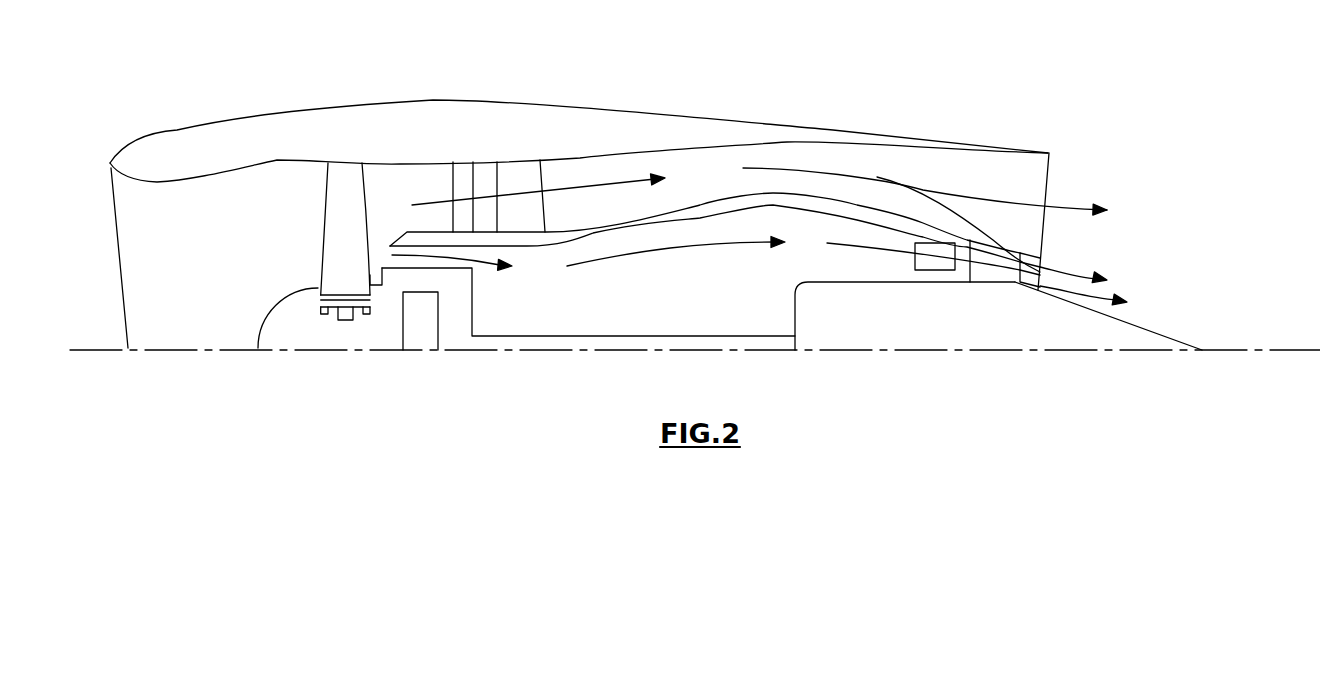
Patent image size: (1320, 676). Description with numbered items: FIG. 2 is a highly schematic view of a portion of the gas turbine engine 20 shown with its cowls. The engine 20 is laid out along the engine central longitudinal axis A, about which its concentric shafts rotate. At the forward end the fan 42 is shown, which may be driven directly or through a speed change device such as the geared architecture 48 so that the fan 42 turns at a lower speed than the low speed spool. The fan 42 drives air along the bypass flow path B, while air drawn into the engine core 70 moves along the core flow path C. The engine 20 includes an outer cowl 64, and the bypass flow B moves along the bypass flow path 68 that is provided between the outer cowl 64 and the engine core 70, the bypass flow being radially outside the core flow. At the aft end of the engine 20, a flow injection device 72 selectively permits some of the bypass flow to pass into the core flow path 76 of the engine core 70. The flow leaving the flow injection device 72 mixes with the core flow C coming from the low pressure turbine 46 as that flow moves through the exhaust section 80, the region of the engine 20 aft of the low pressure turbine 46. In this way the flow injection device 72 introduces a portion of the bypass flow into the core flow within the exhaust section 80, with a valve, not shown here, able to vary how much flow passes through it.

The gas turbine engine 20 is at (930, 106).
The fan 42 is at (333, 257).
The low pressure turbine section 46 is at (925, 263).
The geared architecture 48 is at (420, 330).
The outer cowl 64 is at (643, 110).
The bypass flow path 68 is at (717, 186).
The engine core 70 is at (645, 208).
The flow injection device 72 is at (1041, 260).
The core flow path 76 is at (755, 262).
The exhaust section 80 is at (1019, 322).
The engine central longitudinal axis A is at (1305, 348).
The bypass flow path B is at (529, 197).
The core flow path C is at (443, 255).